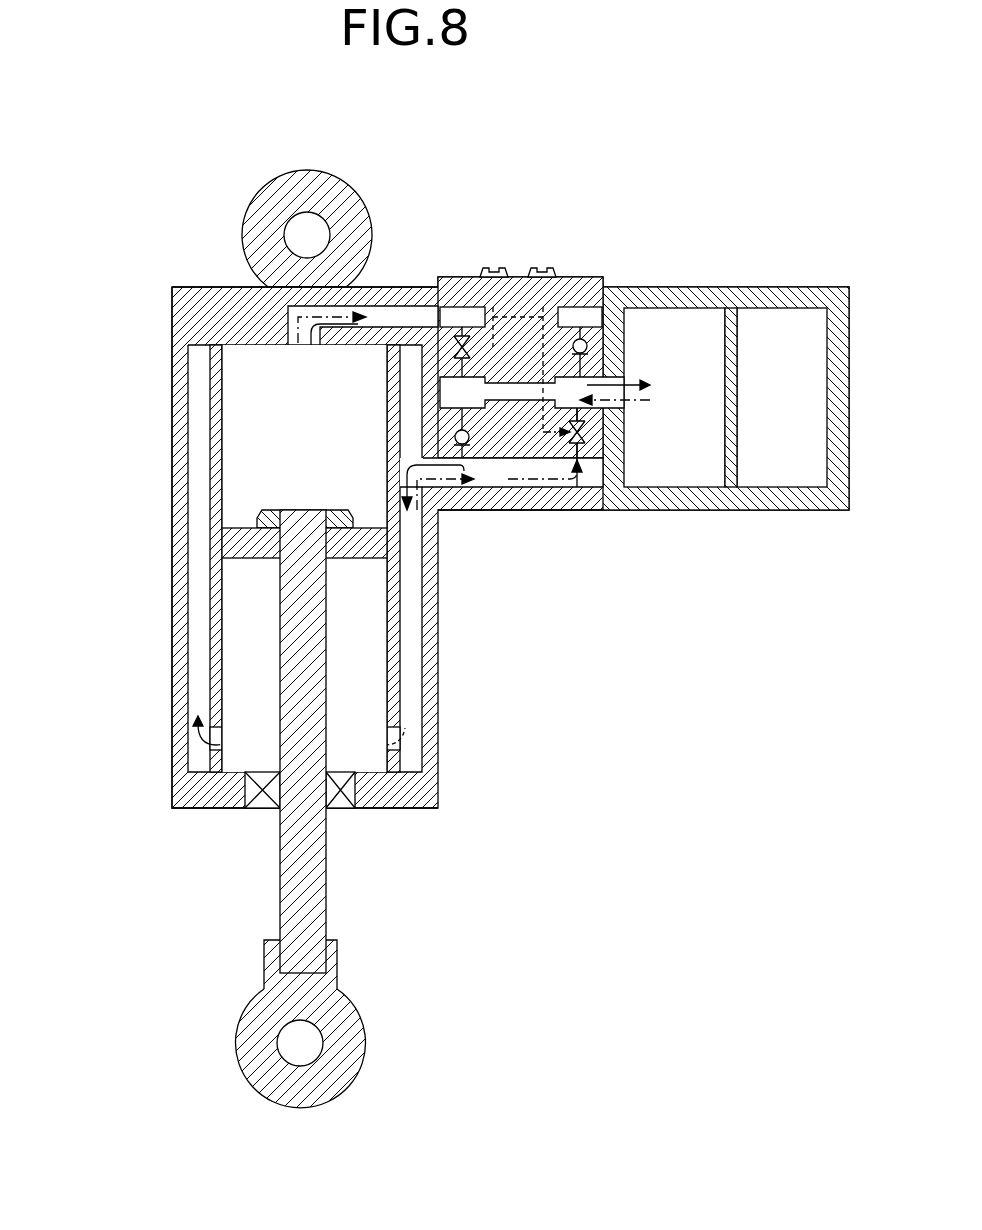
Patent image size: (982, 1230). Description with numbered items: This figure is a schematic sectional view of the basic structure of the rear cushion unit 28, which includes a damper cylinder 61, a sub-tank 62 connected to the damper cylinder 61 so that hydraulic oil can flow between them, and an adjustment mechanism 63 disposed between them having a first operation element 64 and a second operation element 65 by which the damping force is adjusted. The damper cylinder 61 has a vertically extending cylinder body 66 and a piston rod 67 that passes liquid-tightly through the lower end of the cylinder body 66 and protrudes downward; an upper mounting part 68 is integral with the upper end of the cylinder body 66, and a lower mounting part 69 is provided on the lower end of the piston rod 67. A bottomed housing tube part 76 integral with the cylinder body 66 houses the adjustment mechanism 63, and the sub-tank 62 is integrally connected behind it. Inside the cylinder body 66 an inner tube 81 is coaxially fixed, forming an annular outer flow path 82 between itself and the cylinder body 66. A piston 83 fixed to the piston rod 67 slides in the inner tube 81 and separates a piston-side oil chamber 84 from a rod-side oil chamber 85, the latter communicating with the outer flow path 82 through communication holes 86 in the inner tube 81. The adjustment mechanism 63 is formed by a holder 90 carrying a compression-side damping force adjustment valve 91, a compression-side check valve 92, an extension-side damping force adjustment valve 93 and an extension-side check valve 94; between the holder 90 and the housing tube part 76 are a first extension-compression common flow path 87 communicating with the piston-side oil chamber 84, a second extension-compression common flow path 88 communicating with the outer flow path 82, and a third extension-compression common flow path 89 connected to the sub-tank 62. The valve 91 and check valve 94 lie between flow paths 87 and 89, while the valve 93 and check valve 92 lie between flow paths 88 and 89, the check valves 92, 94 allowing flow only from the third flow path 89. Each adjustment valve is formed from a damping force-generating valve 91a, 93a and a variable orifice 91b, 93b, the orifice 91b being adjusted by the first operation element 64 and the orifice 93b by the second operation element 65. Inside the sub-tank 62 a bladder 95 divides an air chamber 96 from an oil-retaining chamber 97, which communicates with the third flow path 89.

The rear cushion unit 28 is at (165, 363).
The damper cylinder 61 is at (160, 688).
The sub-tank 62 is at (795, 292).
The adjustment mechanism 63 is at (590, 255).
The first operation element 64 is at (480, 268).
The second operation element 65 is at (555, 268).
The cylinder body 66 is at (177, 442).
The piston rod 67 is at (307, 895).
The upper mounting part 68 is at (262, 227).
The lower mounting part 69 is at (250, 1040).
The housing tube part 76 is at (577, 505).
The inner tube 81 is at (209, 518).
The outer flow path 82 is at (195, 592).
The piston 83 is at (242, 538).
The piston-side oil chamber 84 is at (268, 430).
The rod-side oil chamber 85 is at (341, 630).
The communication holes 86 is at (212, 750).
The first extension-compression common flow path 87 is at (455, 317).
The second extension-compression common flow path 88 is at (493, 473).
The third extension-compression common flow path 89 is at (600, 370).
The holder 90 is at (586, 456).
The compression-side damping force adjustment valve 91 is at (458, 350).
The damping force-generating valve 91a is at (457, 323).
The variable orifice 91b is at (474, 350).
The compression-side check valve 92 is at (455, 437).
The extension-side damping force adjustment valve 93 is at (600, 443).
The damping force-generating valve 93a is at (592, 442).
The variable orifice 93b is at (572, 442).
The extension-side check valve 94 is at (600, 345).
The bladder 95 is at (737, 455).
The air chamber 96 is at (797, 420).
The oil-retaining chamber 97 is at (697, 458).